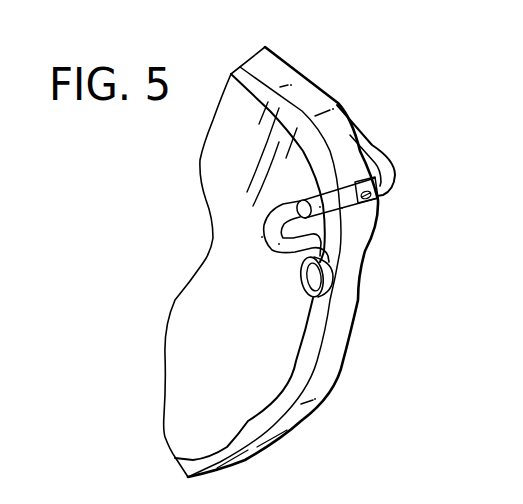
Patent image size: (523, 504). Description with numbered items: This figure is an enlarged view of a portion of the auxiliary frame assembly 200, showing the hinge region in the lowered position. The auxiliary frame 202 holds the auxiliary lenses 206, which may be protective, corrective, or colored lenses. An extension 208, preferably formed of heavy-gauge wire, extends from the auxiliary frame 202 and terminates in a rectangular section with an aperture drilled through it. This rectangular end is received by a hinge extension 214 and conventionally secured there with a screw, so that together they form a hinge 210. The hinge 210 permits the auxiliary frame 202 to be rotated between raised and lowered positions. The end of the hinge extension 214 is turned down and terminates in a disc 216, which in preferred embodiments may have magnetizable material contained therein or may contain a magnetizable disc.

The auxiliary frame assembly 200 is at (137, 193).
The auxiliary frame 202 is at (311, 96).
The auxiliary lenses 206 is at (203, 388).
The extension 208 is at (390, 166).
The hinge 210 is at (373, 199).
The hinge extension 214 is at (272, 233).
The disc 216 is at (328, 282).